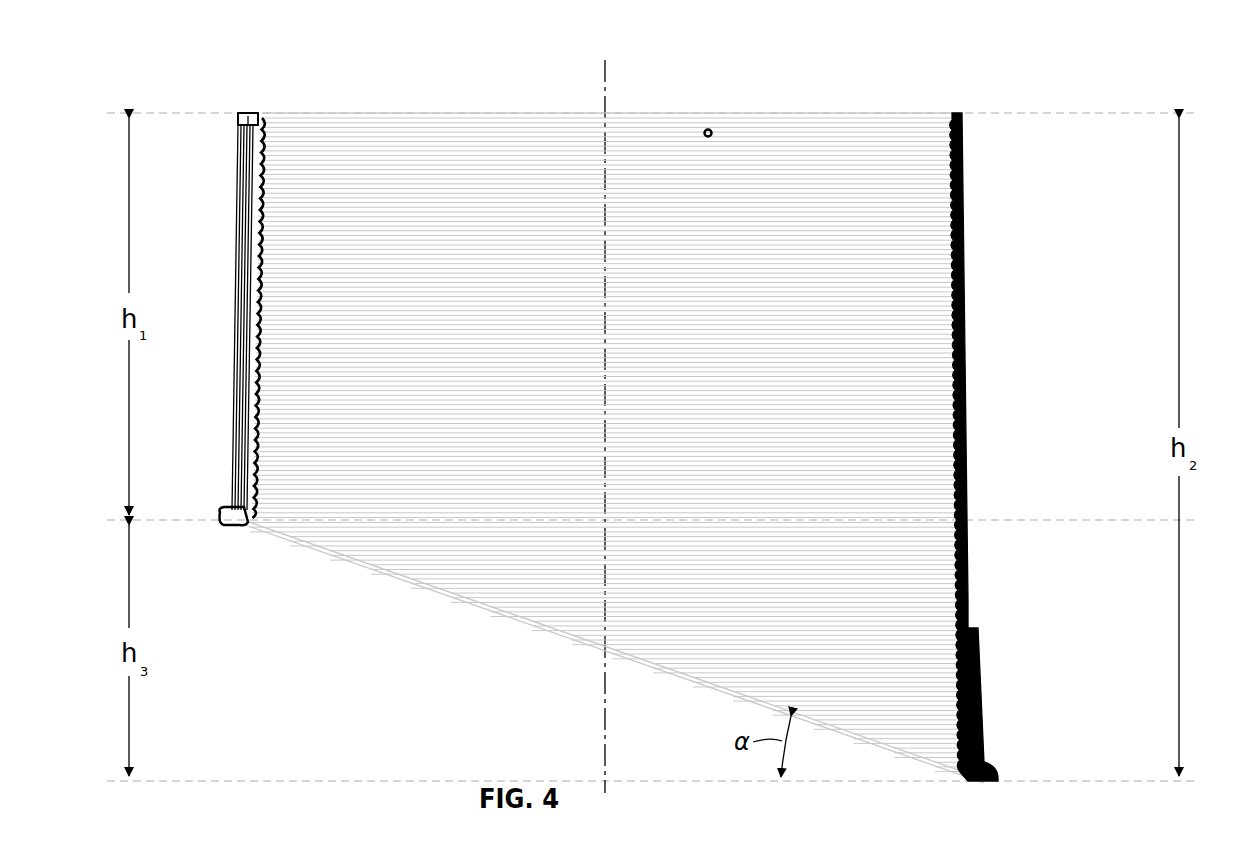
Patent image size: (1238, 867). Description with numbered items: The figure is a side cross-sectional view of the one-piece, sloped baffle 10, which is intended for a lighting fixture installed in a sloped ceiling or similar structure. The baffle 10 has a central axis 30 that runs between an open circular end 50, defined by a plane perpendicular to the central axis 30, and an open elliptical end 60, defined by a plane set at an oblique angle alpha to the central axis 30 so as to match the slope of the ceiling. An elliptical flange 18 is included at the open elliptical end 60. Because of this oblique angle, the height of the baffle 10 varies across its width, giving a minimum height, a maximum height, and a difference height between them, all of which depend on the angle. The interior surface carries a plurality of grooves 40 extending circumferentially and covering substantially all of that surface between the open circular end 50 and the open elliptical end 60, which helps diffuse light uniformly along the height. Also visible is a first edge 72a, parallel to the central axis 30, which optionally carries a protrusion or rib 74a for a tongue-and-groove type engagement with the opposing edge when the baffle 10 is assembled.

The one-piece, sloped baffle 10 is at (1080, 72).
The elliptical flange 18 is at (993, 763).
The central axis 30 is at (606, 95).
The plurality of grooves 40 is at (512, 540).
The open circular end 50 is at (748, 113).
The open elliptical end 60 is at (398, 578).
The first edge 72a is at (250, 118).
The protrusion or rib 74a is at (245, 293).